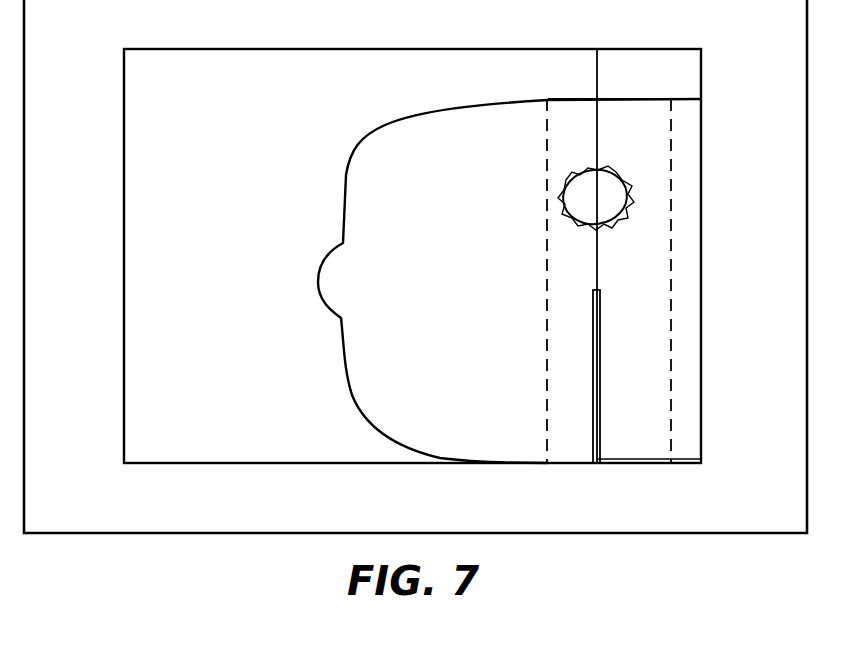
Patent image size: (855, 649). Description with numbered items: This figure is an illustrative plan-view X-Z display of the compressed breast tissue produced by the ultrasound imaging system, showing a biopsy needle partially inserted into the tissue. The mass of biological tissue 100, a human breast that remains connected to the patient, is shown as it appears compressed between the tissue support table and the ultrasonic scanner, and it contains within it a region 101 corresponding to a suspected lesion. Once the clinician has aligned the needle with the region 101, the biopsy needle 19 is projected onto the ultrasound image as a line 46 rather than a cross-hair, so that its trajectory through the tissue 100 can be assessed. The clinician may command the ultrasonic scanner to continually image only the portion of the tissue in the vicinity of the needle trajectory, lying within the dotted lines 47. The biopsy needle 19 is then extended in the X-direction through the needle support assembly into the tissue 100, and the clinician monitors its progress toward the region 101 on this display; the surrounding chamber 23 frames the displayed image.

The imaging chamber 23 is at (220, 153).
The mass of biological tissue 100 is at (470, 193).
The region 101 is at (556, 226).
The line 46 is at (583, 135).
The dotted lines 47 is at (549, 345).
The biopsy needle 19 is at (593, 384).